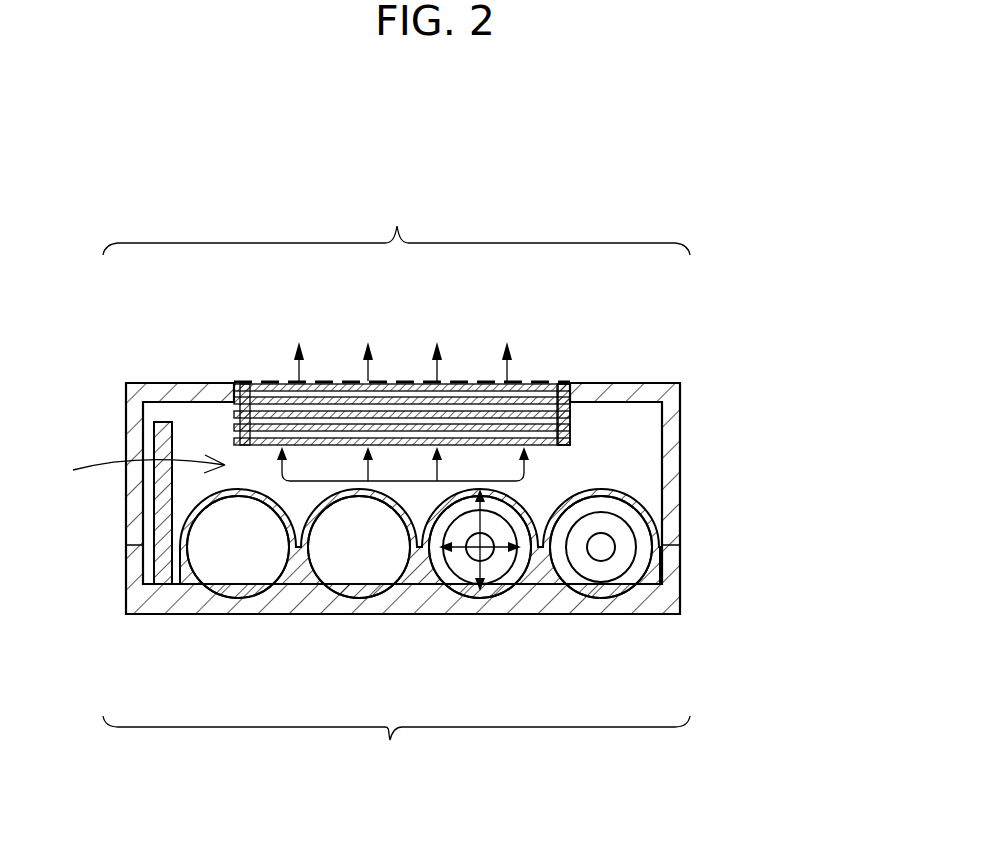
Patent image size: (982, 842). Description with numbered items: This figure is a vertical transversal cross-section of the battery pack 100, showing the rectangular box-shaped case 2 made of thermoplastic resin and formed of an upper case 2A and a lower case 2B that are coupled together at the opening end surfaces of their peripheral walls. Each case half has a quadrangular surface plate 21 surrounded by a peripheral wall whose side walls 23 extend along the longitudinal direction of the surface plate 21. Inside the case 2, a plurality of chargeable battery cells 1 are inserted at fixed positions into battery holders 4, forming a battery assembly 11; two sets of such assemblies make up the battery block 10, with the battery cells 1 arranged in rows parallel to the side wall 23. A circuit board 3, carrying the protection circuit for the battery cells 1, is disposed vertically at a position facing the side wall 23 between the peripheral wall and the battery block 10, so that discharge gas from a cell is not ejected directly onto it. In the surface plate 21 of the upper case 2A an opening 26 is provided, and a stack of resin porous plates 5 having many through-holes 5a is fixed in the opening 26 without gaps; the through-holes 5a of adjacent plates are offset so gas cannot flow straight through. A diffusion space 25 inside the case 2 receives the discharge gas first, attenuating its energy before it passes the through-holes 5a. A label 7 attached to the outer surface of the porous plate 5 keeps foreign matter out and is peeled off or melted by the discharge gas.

The battery pack 100 is at (702, 199).
The case 2 is at (717, 322).
The upper case 2A is at (396, 224).
The lower case 2B is at (396, 749).
The surface plate 21 is at (205, 392).
The side wall 23 is at (133, 440).
The circuit board 3 is at (140, 490).
The battery block 10 is at (505, 525).
The battery assembly 11 is at (647, 490).
The battery cell 1 is at (238, 567).
The battery holder 4 is at (643, 500).
The porous plate 5 is at (500, 382).
The through-hole 5a is at (323, 394).
The label 7 is at (533, 382).
The opening 26 is at (572, 395).
The diffusion space 25 is at (131, 474).